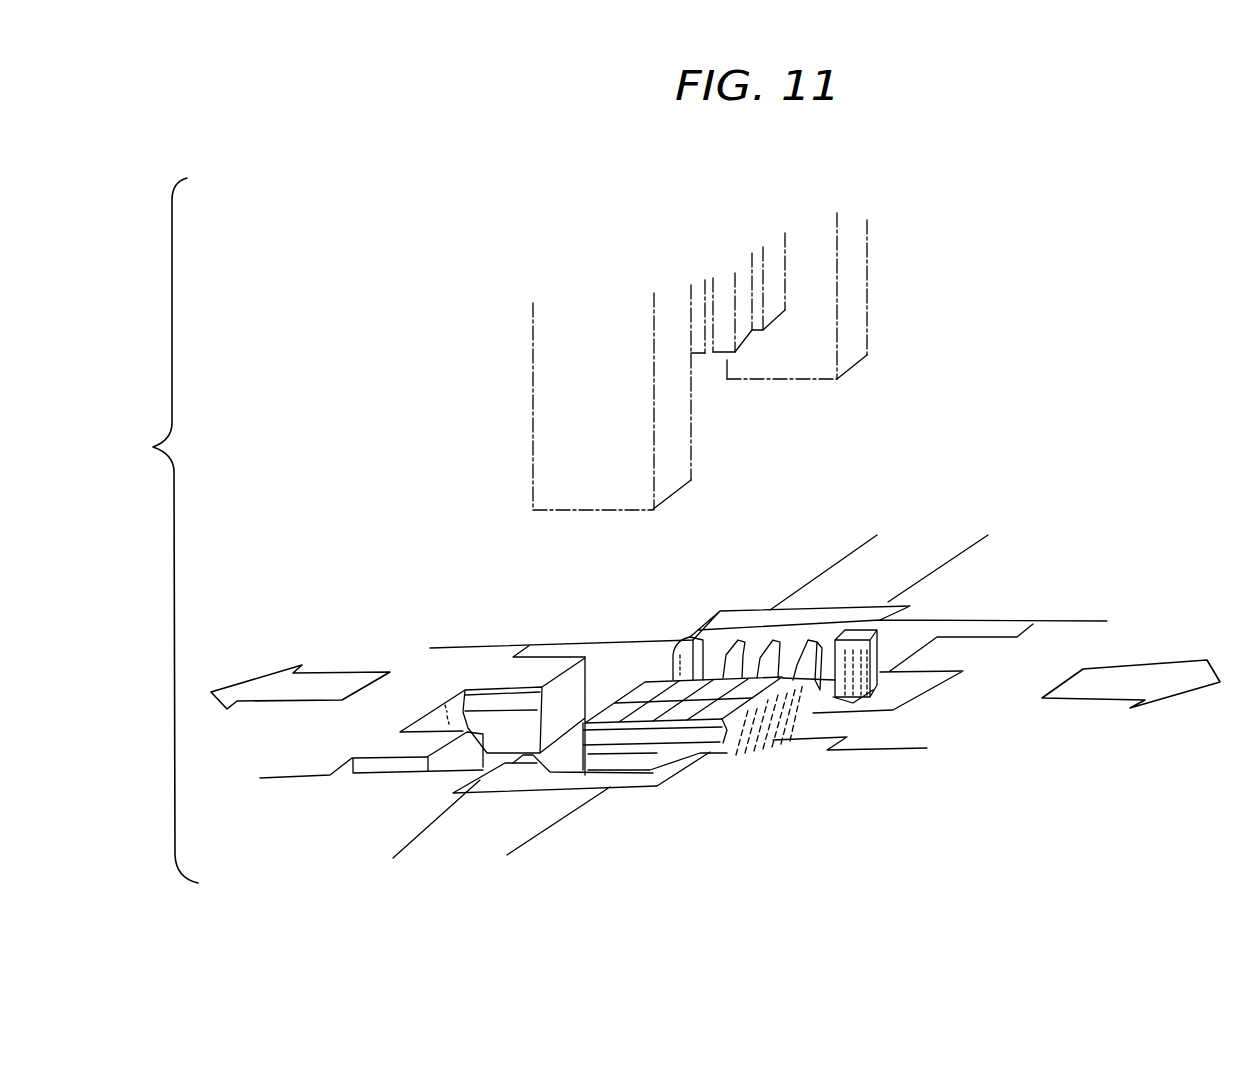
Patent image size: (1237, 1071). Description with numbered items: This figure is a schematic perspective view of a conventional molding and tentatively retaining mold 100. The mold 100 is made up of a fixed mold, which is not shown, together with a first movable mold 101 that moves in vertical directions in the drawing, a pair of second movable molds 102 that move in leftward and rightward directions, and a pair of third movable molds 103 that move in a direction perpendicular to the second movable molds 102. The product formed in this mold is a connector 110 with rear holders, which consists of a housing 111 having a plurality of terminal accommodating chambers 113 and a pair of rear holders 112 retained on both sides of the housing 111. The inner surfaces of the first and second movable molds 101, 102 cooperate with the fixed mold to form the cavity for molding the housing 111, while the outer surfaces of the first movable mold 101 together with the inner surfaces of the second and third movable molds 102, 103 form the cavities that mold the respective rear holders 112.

The molding and tentatively retaining mold 100 is at (648, 342).
The first movable mold 101 is at (545, 384).
The second movable molds 102 is at (473, 648).
The third movable molds 103 is at (850, 572).
The connector with rear holders 110 is at (650, 673).
The housing 111 is at (637, 680).
The rear holders 112 is at (880, 620).
The terminal accommodating chambers 113 is at (688, 730).